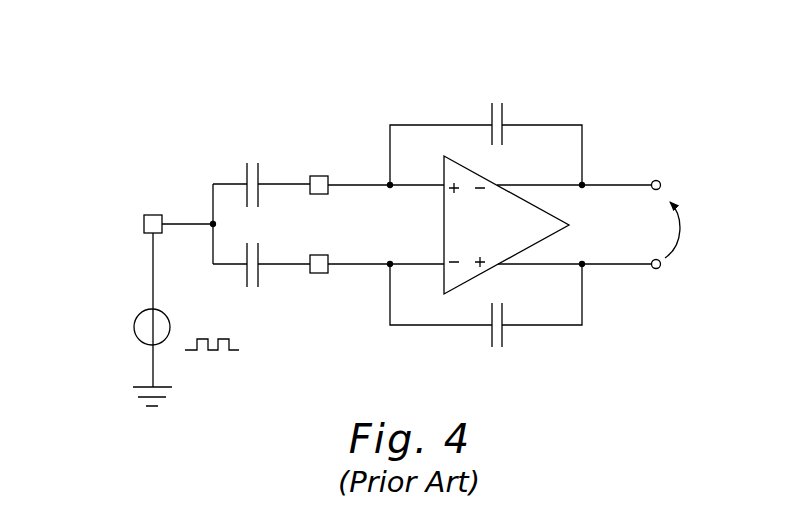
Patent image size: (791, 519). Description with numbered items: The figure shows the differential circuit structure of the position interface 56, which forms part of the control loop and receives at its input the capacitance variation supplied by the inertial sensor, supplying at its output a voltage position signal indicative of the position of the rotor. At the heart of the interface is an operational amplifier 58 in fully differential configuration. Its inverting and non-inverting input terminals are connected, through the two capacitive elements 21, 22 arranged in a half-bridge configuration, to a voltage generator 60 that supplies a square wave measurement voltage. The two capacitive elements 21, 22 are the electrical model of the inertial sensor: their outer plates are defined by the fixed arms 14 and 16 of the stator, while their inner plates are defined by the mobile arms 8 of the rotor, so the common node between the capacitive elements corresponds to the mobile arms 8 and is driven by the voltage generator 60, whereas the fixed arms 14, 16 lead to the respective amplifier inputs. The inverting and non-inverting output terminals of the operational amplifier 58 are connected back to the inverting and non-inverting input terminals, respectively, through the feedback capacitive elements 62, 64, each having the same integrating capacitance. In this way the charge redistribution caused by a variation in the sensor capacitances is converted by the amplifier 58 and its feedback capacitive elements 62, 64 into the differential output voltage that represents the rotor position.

The differential position interface 56 is at (215, 95).
The mobile arms 8 is at (143, 224).
The voltage generator 60 is at (144, 317).
The capacitive element 21 is at (244, 178).
The capacitive element 22 is at (244, 279).
The fixed arm 14 is at (318, 176).
The fixed arm 16 is at (318, 273).
The operational amplifier 58 is at (489, 238).
The feedback capacitive element 62 is at (486, 112).
The feedback capacitive element 64 is at (486, 339).